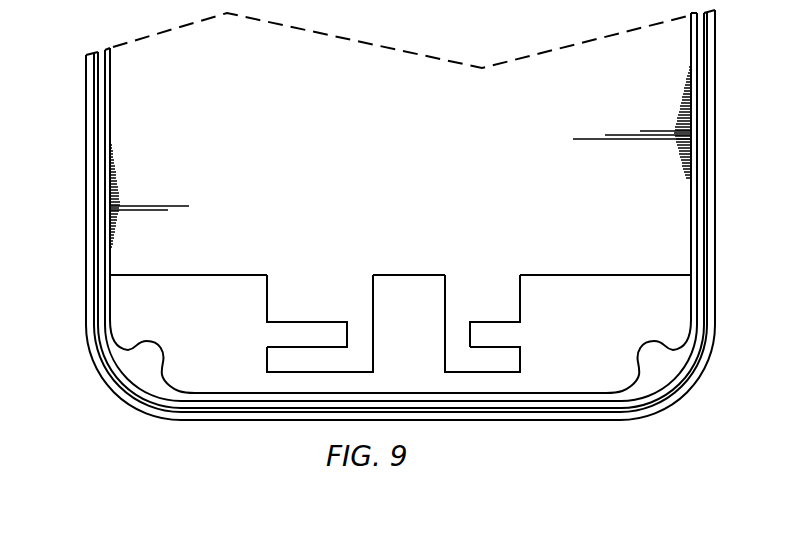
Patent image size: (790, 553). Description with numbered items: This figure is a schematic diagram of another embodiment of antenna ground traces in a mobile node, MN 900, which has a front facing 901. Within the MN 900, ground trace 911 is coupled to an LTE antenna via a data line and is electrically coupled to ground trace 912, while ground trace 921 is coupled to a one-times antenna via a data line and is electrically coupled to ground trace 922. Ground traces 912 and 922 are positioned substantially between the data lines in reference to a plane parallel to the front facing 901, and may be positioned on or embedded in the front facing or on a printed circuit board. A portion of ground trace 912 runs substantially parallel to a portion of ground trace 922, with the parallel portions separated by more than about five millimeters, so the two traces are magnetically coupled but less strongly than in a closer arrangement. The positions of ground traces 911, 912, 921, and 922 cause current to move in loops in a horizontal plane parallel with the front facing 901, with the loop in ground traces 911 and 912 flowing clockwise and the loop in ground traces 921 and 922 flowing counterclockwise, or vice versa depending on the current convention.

The MN 900 is at (97, 28).
The front facing 901 is at (416, 150).
The ground trace 921 is at (267, 358).
The ground trace 922 is at (318, 373).
The ground trace 911 is at (522, 358).
The ground trace 912 is at (482, 373).